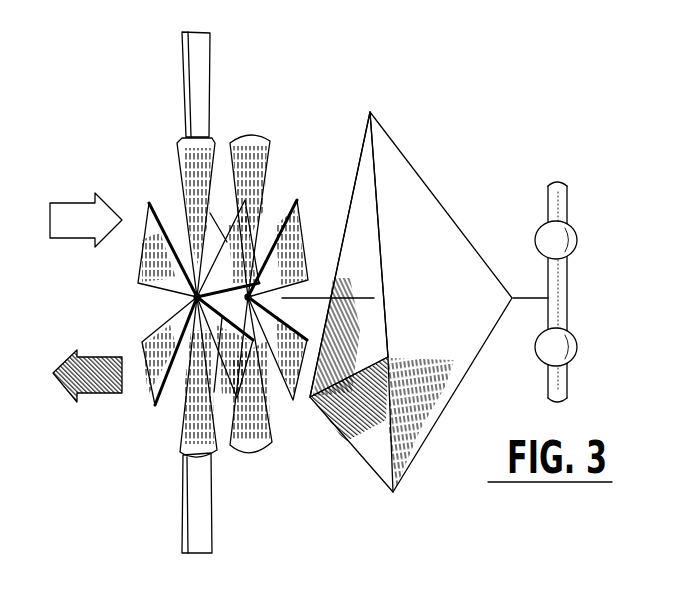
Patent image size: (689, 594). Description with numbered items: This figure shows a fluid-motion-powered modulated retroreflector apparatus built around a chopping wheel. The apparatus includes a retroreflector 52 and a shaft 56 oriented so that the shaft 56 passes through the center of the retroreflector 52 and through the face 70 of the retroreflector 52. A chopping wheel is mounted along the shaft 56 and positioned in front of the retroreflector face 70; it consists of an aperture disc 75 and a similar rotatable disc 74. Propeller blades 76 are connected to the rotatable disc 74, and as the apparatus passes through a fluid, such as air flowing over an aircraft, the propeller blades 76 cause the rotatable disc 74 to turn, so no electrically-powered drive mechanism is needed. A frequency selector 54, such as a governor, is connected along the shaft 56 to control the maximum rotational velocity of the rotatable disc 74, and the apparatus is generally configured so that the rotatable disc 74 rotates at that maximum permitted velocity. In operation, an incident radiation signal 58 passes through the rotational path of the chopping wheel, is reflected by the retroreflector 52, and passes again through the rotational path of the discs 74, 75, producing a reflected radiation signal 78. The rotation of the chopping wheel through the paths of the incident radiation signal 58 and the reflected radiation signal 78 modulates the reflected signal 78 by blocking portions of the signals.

The retroreflector 52 is at (440, 170).
The frequency selector 54 is at (553, 200).
The shaft 56 is at (530, 300).
The incident radiation signal 58 is at (70, 210).
The face of the retroreflector 70 is at (362, 212).
The rotatable disc of the chopping wheel 74 is at (152, 203).
The aperture disc 75 is at (248, 450).
The propeller blades 76 is at (193, 45).
The reflected radiation signal 78 is at (80, 385).